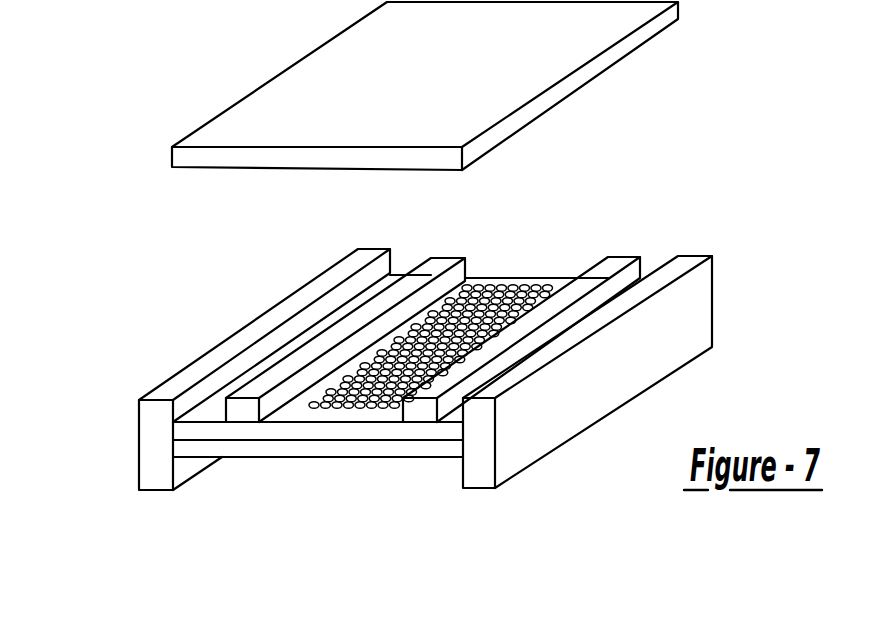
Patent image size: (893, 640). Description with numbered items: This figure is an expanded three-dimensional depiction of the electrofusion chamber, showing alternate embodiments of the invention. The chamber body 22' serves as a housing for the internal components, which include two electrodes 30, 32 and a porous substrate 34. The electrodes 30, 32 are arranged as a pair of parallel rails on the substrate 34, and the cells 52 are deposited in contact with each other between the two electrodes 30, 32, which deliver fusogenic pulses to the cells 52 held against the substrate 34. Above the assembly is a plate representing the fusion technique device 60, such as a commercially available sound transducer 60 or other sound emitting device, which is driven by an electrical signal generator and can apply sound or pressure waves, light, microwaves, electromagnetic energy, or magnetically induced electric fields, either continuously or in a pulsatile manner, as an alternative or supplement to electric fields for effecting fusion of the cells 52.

The sound transducer 60 is at (345, 88).
The chamber body 22' is at (218, 394).
The porous substrate 34 is at (445, 432).
The electrode 30 is at (248, 412).
The electrode 32 is at (418, 413).
The cells 52 is at (413, 327).